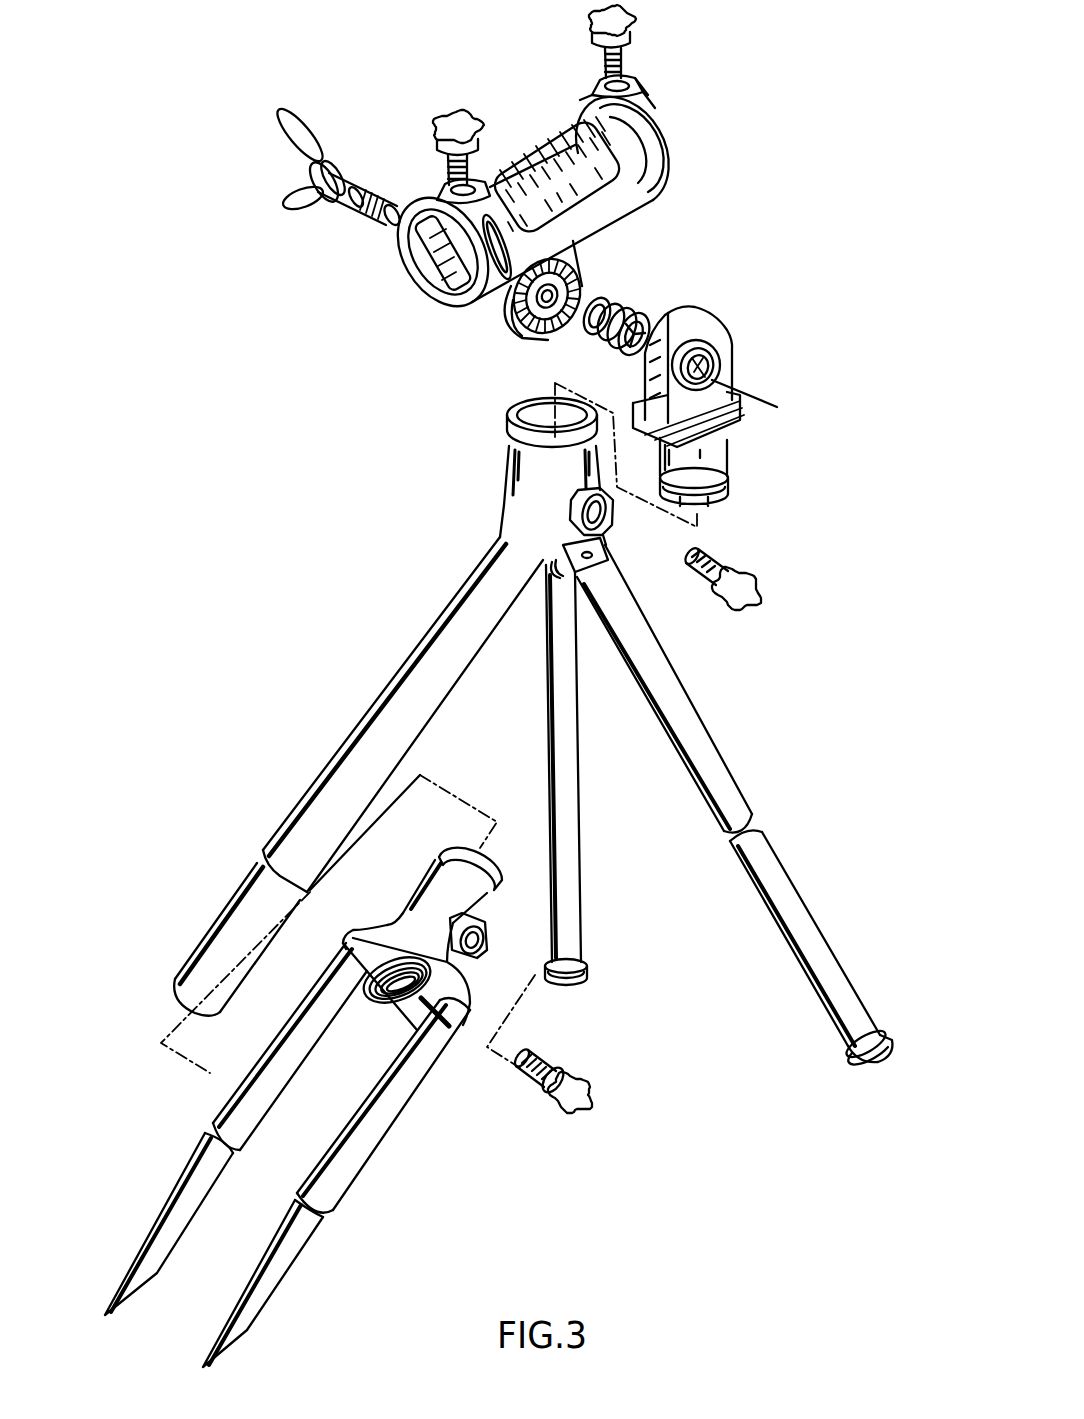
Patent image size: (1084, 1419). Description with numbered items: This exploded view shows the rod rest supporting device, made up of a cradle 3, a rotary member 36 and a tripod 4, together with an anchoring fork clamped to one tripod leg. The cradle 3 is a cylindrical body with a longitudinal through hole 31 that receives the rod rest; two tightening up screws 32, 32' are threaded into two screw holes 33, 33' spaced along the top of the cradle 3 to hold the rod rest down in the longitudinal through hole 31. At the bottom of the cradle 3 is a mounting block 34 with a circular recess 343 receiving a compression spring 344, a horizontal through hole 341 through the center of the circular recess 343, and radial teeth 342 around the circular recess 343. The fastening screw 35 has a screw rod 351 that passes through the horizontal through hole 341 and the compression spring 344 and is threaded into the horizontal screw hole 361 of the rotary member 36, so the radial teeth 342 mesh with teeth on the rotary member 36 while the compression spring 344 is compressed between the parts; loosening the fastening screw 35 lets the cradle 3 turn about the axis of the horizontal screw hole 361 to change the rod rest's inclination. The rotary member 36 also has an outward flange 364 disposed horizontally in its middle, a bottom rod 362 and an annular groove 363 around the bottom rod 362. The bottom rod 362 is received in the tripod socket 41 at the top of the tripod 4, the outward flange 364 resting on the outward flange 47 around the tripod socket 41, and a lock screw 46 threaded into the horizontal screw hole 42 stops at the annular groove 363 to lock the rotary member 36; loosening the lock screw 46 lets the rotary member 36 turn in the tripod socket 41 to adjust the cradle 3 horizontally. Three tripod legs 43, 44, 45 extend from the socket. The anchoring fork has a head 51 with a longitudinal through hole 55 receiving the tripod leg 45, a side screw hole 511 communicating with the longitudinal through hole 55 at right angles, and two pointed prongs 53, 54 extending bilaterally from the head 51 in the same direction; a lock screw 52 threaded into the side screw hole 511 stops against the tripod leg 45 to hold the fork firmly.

The cradle 3 is at (668, 112).
The longitudinal through hole 31 is at (437, 257).
The tightening up screw 32 is at (651, 40).
The tightening up screw 32' is at (462, 109).
The screw hole 33 is at (674, 83).
The screw hole 33' is at (496, 134).
The mounting block 34 is at (513, 300).
The horizontal through hole 341 is at (513, 327).
The radial teeth 342 is at (580, 255).
The circular recess 343 is at (598, 298).
The compression spring 344 is at (630, 312).
The fastening screw 35 is at (348, 178).
The screw rod 351 is at (383, 205).
The rotary member 36 is at (722, 347).
The horizontal screw hole 361 is at (715, 366).
The bottom rod 362 is at (712, 462).
The annular groove 363 is at (725, 487).
The outward flange 364 is at (745, 420).
The tripod 4 is at (519, 512).
The tripod socket 41 is at (527, 422).
The horizontal screw hole 42 is at (618, 514).
The tripod leg 43 is at (670, 697).
The tripod leg 44 is at (567, 783).
The tripod leg 45 is at (327, 765).
The lock screw 46 is at (742, 597).
The outward flange 47 is at (546, 458).
The head 51 is at (473, 917).
The side screw hole 511 is at (487, 947).
The lock screw 52 is at (593, 1100).
The pointed prong 53 is at (287, 1267).
The pointed prong 54 is at (193, 1200).
The longitudinal through hole 55 is at (388, 1000).